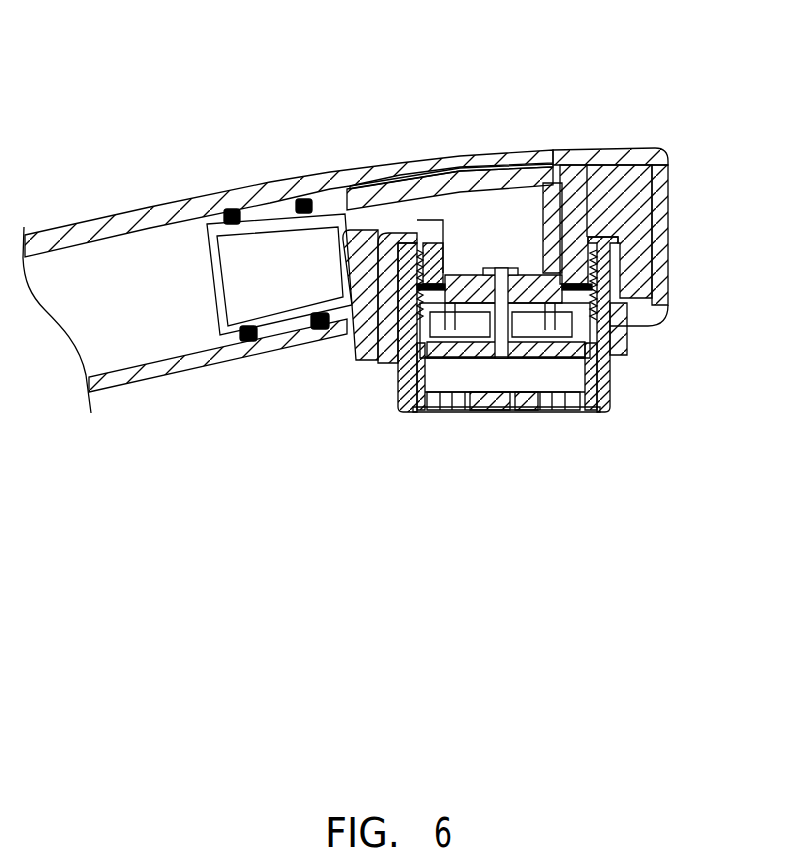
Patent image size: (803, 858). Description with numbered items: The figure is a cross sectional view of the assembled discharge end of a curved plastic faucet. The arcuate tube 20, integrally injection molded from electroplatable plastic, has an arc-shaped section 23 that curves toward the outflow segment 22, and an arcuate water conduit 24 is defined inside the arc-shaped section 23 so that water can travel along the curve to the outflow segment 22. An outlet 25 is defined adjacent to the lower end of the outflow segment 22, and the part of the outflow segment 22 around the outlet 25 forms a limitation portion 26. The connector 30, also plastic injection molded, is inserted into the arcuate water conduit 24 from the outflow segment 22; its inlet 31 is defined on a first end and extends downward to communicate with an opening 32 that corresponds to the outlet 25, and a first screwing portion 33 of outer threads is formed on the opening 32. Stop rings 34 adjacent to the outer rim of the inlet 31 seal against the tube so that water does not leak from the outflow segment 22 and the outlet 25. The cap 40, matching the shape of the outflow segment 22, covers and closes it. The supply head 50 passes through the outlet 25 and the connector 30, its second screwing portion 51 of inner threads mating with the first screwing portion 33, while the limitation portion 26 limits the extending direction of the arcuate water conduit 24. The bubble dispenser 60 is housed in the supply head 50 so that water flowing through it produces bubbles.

The arcuate tube 20 is at (379, 275).
The outflow segment 22 is at (628, 160).
The arc-shaped section 23 is at (107, 220).
The arcuate water conduit 24 is at (147, 337).
The outlet 25 is at (660, 325).
The limitation portion 26 is at (615, 337).
The connector 30 is at (377, 190).
The inlet 31 is at (230, 283).
The opening 32 is at (540, 273).
The first screwing portion 33 is at (350, 313).
The stop ring 34 is at (303, 200).
The cap 40 is at (668, 188).
The supply head 50 is at (612, 380).
The second screwing portion 51 is at (387, 357).
The bubble dispenser 60 is at (527, 413).